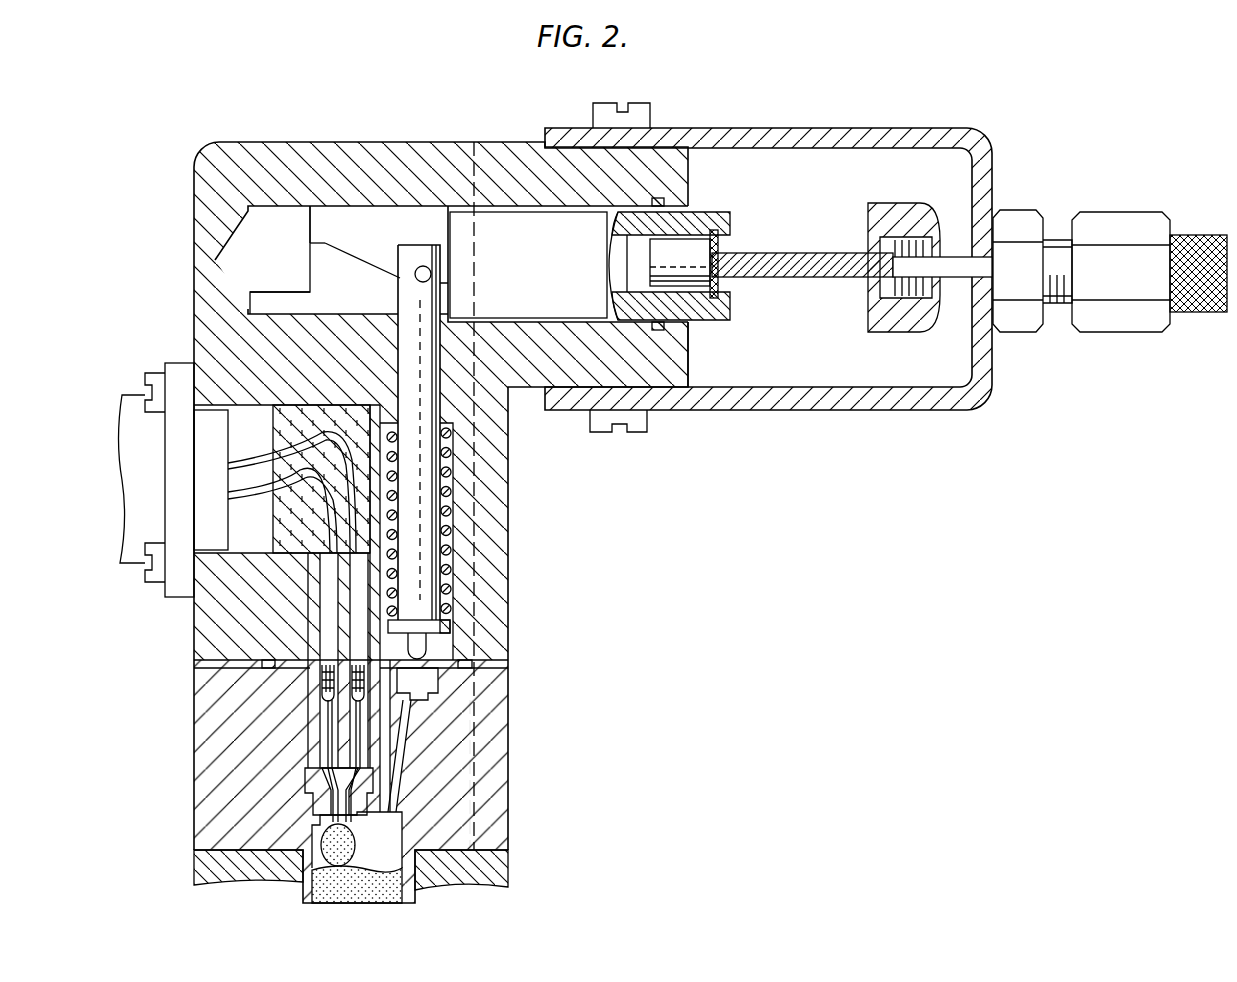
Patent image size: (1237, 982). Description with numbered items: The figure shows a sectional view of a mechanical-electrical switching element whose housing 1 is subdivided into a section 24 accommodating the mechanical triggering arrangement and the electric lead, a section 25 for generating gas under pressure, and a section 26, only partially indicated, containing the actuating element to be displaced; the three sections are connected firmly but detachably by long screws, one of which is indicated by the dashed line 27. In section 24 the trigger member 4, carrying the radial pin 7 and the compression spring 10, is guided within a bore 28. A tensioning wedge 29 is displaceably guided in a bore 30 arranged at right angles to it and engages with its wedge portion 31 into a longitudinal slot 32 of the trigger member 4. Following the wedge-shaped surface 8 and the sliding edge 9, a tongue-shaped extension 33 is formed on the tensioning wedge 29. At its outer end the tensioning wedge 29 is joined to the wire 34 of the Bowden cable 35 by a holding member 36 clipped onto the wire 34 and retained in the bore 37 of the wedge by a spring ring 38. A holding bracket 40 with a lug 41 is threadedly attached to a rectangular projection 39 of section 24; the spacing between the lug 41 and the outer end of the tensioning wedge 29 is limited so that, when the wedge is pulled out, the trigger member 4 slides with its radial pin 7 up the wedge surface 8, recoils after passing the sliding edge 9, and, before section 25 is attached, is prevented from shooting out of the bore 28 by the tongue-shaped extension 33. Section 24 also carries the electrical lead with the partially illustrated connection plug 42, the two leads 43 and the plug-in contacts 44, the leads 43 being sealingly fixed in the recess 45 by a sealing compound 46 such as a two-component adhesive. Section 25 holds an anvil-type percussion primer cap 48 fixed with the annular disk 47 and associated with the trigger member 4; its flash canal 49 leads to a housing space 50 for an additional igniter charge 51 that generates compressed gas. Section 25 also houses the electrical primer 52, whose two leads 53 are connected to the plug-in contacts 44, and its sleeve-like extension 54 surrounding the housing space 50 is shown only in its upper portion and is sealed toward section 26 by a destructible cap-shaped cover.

The housing 1 is at (510, 606).
The trigger member 4 is at (420, 543).
The radial pin 7 is at (418, 268).
The wedge-shaped surface 8 is at (360, 256).
The sliding edge 9 is at (313, 240).
The compression spring 10 is at (452, 510).
The housing section 24 is at (495, 478).
The housing section 25 is at (455, 752).
The housing section 26 is at (483, 862).
The screw 27 is at (470, 786).
The bore 28 is at (438, 648).
The tensioning wedge 29 is at (543, 276).
The bore 30 is at (262, 220).
The wedge portion 31 is at (324, 262).
The longitudinal slot 32 is at (433, 250).
The tongue-shaped extension 33 is at (268, 306).
The wire 34 is at (810, 270).
The Bowden cable 35 is at (1196, 300).
The holding member 36 is at (706, 295).
The bore 37 is at (633, 262).
The spring ring 38 is at (690, 268).
The rectangular projection 39 is at (672, 372).
The holding bracket 40 is at (882, 400).
The lug 41 is at (947, 308).
The connection plug 42 is at (118, 528).
The leads 43 is at (333, 618).
The plug-in contacts 44 is at (330, 688).
The recess 45 is at (240, 435).
The sealing compound 46 is at (298, 400).
The annular disk 47 is at (465, 675).
The percussion primer cap 48 is at (420, 681).
The flash canal 49 is at (410, 715).
The housing space 50 is at (392, 833).
The igniter charge 51 is at (380, 887).
The electrical primer 52 is at (330, 842).
The leads 53 is at (355, 738).
The sleeve-like extension 54 is at (280, 884).